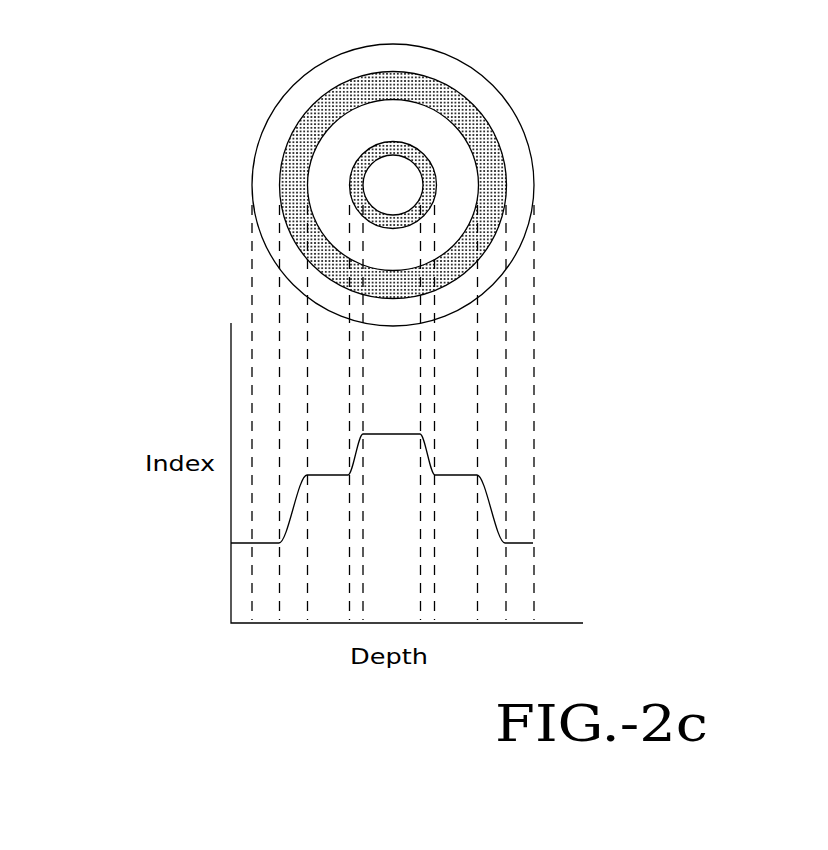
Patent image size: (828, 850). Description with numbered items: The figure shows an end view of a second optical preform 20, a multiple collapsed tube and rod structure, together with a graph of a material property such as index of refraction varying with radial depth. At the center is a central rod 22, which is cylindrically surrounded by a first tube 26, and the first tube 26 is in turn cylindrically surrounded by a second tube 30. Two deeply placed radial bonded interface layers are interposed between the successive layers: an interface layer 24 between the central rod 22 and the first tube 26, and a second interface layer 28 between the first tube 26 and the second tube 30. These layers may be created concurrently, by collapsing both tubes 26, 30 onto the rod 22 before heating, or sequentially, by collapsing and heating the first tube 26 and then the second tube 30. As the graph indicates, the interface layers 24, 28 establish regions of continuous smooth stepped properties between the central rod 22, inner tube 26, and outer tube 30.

The second optical preform 20 is at (322, 31).
The central rod 22 is at (403, 180).
The interface layer 24 is at (363, 218).
The first tube 26 is at (410, 133).
The second interface layer 28 is at (288, 164).
The second tube 30 is at (277, 230).